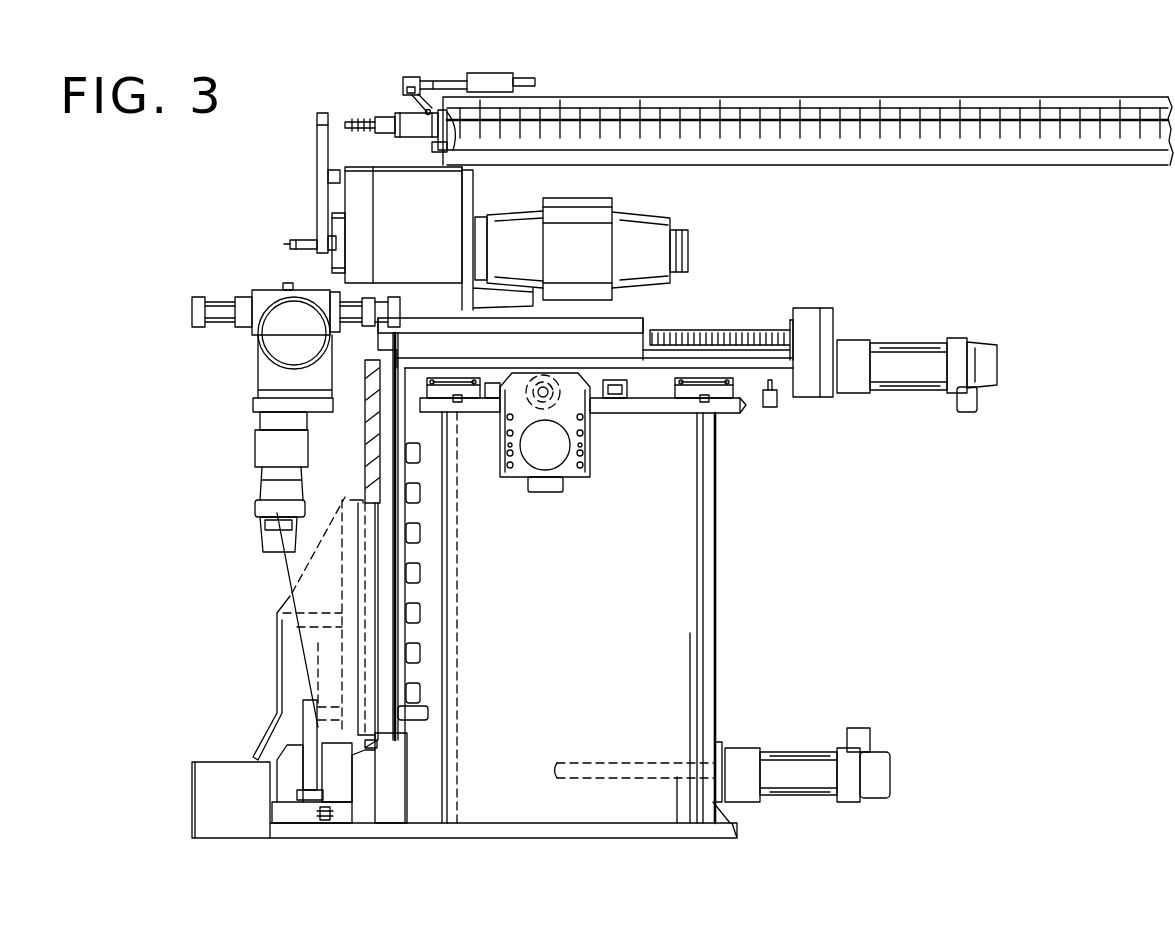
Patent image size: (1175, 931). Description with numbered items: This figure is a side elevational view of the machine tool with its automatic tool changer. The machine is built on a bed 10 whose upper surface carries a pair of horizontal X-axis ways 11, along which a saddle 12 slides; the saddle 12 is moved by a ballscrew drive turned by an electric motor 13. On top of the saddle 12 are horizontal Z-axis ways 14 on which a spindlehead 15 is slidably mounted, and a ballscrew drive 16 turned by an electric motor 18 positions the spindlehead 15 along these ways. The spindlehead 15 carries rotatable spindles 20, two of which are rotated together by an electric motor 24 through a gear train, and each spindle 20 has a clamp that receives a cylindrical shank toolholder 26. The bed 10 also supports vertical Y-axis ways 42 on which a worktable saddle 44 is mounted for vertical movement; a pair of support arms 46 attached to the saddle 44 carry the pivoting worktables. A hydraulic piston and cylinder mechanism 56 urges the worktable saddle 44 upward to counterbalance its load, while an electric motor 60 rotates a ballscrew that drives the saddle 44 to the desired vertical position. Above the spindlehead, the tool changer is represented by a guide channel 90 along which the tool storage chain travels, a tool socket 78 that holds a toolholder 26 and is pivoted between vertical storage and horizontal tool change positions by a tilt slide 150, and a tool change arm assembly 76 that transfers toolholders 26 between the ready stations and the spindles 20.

The bed 10 is at (722, 560).
The X-axis ways 11 is at (452, 378).
The saddle 12 is at (670, 370).
The electric motor 13 is at (548, 458).
The Z-axis ways 14 is at (770, 356).
The spindlehead 15 is at (428, 267).
The ballscrew drive 16 is at (752, 332).
The electric motor 18 is at (908, 344).
The spindle 20 is at (332, 262).
The electric motor 24 is at (650, 232).
The toolholder 26 is at (386, 133).
The Y-axis ways 42 is at (366, 420).
The worktable saddle 44 is at (372, 627).
The support arms 46 is at (343, 493).
The hydraulic piston and cylinder mechanism 56 is at (300, 728).
The electric motor 60 is at (780, 760).
The tool change arm assembly 76 is at (320, 170).
The tool socket 78 is at (414, 140).
The guide channel 90 is at (558, 112).
The tilt slide 150 is at (403, 82).